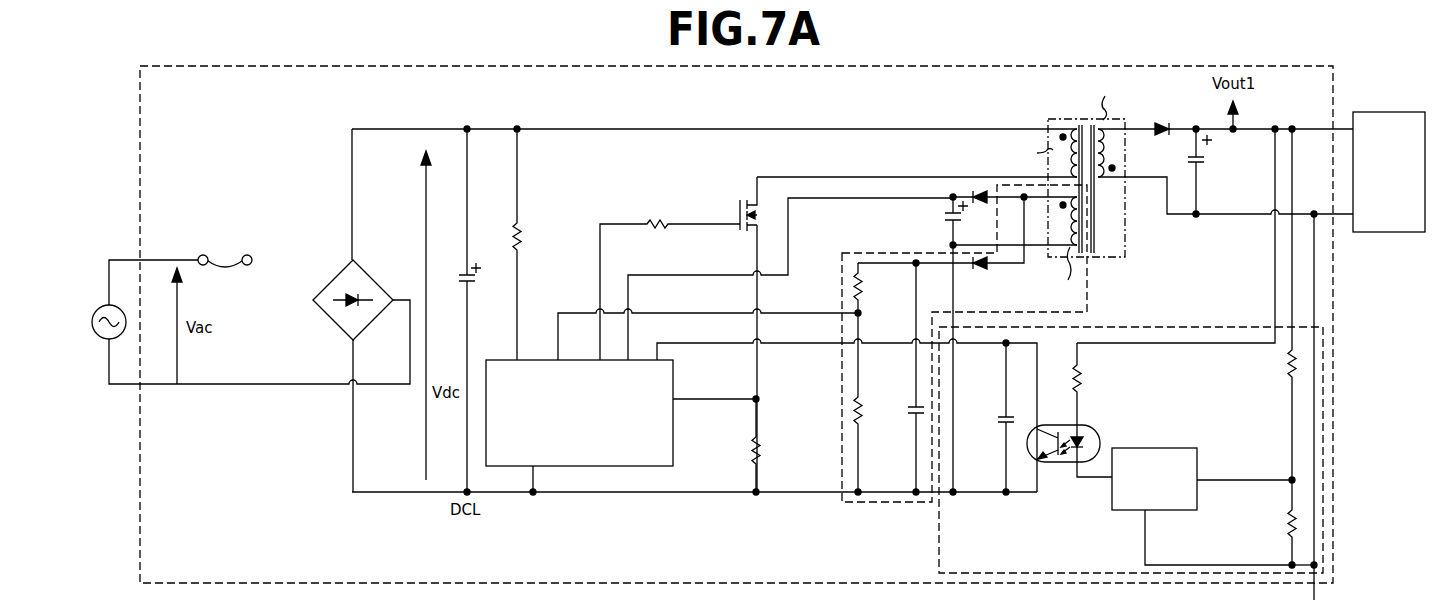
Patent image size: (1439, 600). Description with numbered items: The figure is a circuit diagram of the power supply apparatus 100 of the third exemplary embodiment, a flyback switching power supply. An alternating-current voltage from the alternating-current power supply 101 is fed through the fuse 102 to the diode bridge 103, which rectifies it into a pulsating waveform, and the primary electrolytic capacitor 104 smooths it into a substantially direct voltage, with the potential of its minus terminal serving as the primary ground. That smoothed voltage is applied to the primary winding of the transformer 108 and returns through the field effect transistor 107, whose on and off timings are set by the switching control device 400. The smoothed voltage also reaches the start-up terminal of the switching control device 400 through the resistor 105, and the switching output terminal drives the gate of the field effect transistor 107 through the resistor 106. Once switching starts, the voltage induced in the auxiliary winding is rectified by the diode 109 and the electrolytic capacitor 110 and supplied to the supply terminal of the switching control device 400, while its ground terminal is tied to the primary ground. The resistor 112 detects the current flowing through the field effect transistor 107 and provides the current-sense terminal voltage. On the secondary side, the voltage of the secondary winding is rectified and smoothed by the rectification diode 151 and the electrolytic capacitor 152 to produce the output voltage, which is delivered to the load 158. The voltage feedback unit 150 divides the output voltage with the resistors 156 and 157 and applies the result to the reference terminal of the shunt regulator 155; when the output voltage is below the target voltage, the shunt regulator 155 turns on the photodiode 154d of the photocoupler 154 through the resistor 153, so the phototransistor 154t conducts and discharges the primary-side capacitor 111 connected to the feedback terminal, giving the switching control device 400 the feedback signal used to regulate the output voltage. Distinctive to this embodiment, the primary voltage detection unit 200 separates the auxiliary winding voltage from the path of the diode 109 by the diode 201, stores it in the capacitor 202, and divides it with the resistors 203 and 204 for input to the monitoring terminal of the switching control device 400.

The power supply apparatus 100 is at (247, 65).
The alternating-current power supply 101 is at (102, 305).
The fuse 102 is at (217, 255).
The diode bridge 103 is at (330, 323).
The primary electrolytic capacitor 104 is at (475, 287).
The resistor 105 is at (518, 225).
The resistor 106 is at (655, 214).
The field effect transistor 107 is at (752, 200).
The transformer 108 is at (1058, 119).
The diode 109 is at (978, 193).
The electrolytic capacitor 110 is at (950, 235).
The primary-side capacitor 111 is at (1003, 428).
The resistor 112 is at (762, 446).
The voltage feedback unit 150 is at (1163, 322).
The rectification diode 151 is at (1160, 124).
The electrolytic capacitor 152 is at (1200, 167).
The resistor 153 is at (1080, 374).
The photocoupler 154 is at (1090, 478).
The photodiode 154d is at (1070, 463).
The phototransistor 154t is at (1052, 452).
The shunt regulator 155 is at (1163, 448).
The resistor 156 is at (1285, 370).
The resistor 157 is at (1285, 527).
The load 158 is at (1387, 111).
The primary voltage detection unit 200 is at (848, 253).
The diode 201 is at (987, 273).
The capacitor 202 is at (912, 415).
The resistor 203 is at (863, 287).
The resistor 204 is at (890, 391).
The switching control device 400 is at (580, 466).